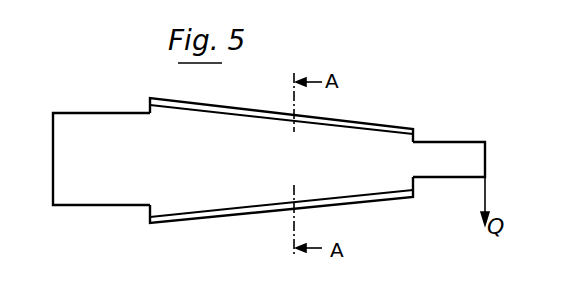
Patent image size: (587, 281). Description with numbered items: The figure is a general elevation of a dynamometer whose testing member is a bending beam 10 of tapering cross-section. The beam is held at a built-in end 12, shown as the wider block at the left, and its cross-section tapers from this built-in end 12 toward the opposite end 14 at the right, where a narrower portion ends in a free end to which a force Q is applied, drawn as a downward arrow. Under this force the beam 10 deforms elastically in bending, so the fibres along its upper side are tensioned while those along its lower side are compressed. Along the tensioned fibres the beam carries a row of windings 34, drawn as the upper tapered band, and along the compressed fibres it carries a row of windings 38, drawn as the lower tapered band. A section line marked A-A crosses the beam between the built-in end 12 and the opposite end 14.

The bending beam 10 is at (237, 217).
The built-in end 12 is at (106, 206).
The opposite end 14 is at (470, 150).
The windings 34 is at (250, 120).
The windings 38 is at (274, 198).